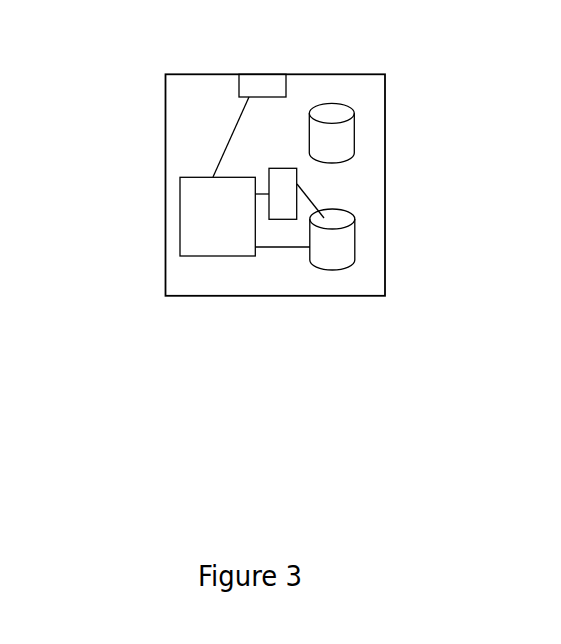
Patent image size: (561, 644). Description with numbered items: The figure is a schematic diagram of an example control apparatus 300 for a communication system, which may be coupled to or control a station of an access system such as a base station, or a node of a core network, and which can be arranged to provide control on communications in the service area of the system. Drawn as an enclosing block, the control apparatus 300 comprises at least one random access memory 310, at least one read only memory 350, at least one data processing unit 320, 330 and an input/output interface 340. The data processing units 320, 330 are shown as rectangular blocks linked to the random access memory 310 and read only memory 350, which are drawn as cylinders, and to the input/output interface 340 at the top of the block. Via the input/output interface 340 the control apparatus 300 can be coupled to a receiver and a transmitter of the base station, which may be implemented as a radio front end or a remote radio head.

The control apparatus 300 is at (158, 72).
The random access memory 310 is at (335, 262).
The data processing unit 320 is at (180, 232).
The data processing unit 330 is at (269, 170).
The input/output interface 340 is at (239, 90).
The read only memory 350 is at (354, 128).